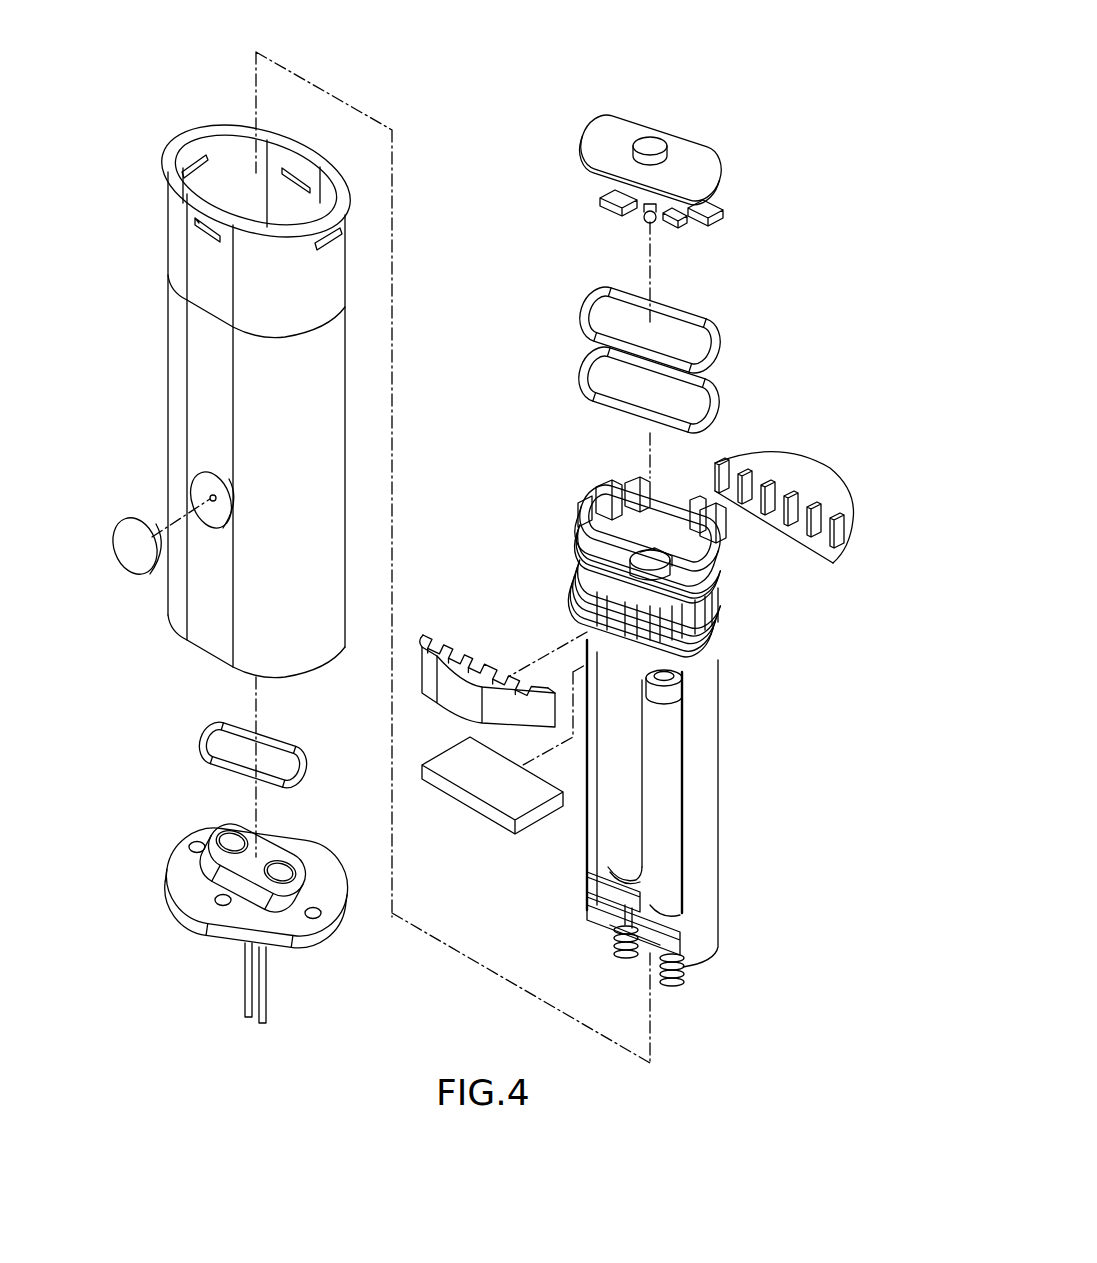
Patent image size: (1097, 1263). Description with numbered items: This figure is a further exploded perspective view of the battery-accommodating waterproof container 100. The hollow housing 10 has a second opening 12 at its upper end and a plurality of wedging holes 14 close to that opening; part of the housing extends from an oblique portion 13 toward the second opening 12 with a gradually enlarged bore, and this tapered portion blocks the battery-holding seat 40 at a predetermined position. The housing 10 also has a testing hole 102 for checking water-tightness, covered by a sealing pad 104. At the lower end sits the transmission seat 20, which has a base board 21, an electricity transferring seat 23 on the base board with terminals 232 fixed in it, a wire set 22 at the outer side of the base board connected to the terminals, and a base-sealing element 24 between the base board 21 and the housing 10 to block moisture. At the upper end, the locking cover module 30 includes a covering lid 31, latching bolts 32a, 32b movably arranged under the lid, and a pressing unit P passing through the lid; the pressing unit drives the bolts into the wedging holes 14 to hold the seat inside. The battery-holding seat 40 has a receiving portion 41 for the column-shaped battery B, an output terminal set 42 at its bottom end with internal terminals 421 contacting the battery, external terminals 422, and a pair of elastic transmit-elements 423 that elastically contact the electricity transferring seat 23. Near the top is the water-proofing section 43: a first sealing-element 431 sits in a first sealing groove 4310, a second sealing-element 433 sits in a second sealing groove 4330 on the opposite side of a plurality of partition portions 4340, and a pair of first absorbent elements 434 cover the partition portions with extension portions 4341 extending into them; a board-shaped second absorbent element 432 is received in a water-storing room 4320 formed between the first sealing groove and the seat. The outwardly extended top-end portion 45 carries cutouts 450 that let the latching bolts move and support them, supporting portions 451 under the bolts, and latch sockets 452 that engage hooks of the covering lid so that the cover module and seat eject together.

The battery-accommodating waterproof container 100 is at (831, 49).
The housing 10 is at (160, 368).
The second opening 12 is at (215, 125).
The oblique portion 13 is at (205, 258).
The wedging holes 14 is at (196, 229).
The testing hole 102 is at (205, 488).
The sealing pad 104 is at (134, 555).
The transmission seat 20 is at (182, 919).
The base board 21 is at (318, 930).
The wire set 22 is at (262, 990).
The electricity transferring seat 23 is at (220, 862).
The terminals 232 is at (280, 860).
The base-sealing element 24 is at (278, 748).
The locking cover module 30 is at (712, 152).
The covering lid 31 is at (612, 125).
The latching bolt 32a is at (607, 207).
The latching bolt 32b is at (722, 218).
The pressing unit P is at (655, 145).
The battery-holding seat 40 is at (719, 742).
The receiving portion 41 is at (708, 800).
The output terminal set 42 is at (614, 950).
The internal terminals 421 is at (600, 880).
The external terminals 422 is at (605, 920).
The elastic transmit-element 423 is at (662, 970).
The water-proofing section 43 is at (868, 277).
The first sealing-element 431 is at (720, 398).
The second absorbent element 432 is at (480, 810).
The second sealing-element 433 is at (722, 340).
The first absorbent element 434 is at (820, 500).
The extension portions 4341 is at (812, 462).
The first sealing groove 4310 is at (728, 650).
The water-storing room 4320 is at (690, 683).
The second sealing groove 4330 is at (735, 598).
The partition portions 4340 is at (607, 600).
The top-end portion 45 is at (575, 502).
The cutouts 450 is at (592, 486).
The supporting portions 451 is at (605, 530).
The latch sockets 452 is at (630, 481).
The battery B is at (613, 826).